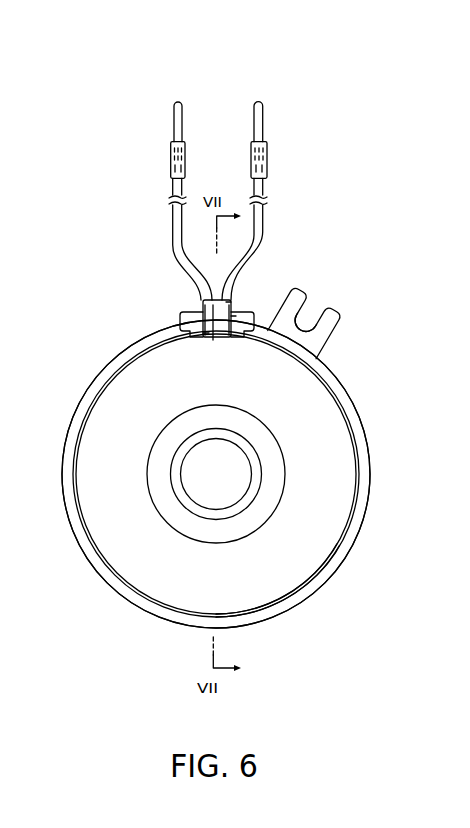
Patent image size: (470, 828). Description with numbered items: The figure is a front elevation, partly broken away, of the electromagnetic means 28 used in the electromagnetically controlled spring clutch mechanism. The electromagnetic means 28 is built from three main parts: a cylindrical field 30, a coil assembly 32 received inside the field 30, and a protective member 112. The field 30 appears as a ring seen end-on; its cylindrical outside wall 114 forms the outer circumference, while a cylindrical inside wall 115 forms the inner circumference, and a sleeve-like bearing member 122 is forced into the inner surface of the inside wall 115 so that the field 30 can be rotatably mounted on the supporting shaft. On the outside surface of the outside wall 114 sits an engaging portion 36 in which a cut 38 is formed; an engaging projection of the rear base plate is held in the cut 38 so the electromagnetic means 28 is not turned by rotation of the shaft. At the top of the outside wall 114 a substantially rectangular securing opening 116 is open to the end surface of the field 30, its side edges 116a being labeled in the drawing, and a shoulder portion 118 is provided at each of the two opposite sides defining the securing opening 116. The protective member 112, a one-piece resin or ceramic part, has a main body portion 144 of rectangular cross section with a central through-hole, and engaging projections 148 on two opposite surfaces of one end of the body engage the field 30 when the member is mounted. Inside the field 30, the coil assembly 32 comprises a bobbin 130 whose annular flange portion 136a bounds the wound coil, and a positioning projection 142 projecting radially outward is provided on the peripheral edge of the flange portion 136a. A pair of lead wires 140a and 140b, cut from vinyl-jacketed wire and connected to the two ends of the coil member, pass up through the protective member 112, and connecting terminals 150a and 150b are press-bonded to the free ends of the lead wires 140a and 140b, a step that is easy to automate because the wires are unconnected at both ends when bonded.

The electromagnetic means 28 is at (104, 306).
The field 30 is at (370, 417).
The coil assembly 32 is at (344, 543).
The engaging portion 36 is at (332, 328).
The cut 38 is at (312, 306).
The protective member 112 is at (190, 295).
The outside wall 114 is at (273, 612).
The inside wall 115 is at (204, 540).
The securing opening 116 is at (213, 340).
The terminal pin end 116a is at (191, 306).
The shoulder portion 118 is at (180, 330).
The bearing member 122 is at (178, 493).
The bobbin 130 is at (309, 592).
The flange portion 136a is at (345, 478).
The lead wire 140a is at (263, 228).
The lead wire 140b is at (177, 233).
The positioning projection 142 is at (234, 318).
The main body portion 144 is at (234, 308).
The engaging projection 148 is at (200, 342).
The connecting terminal 150a is at (262, 122).
The connecting terminal 150b is at (176, 125).